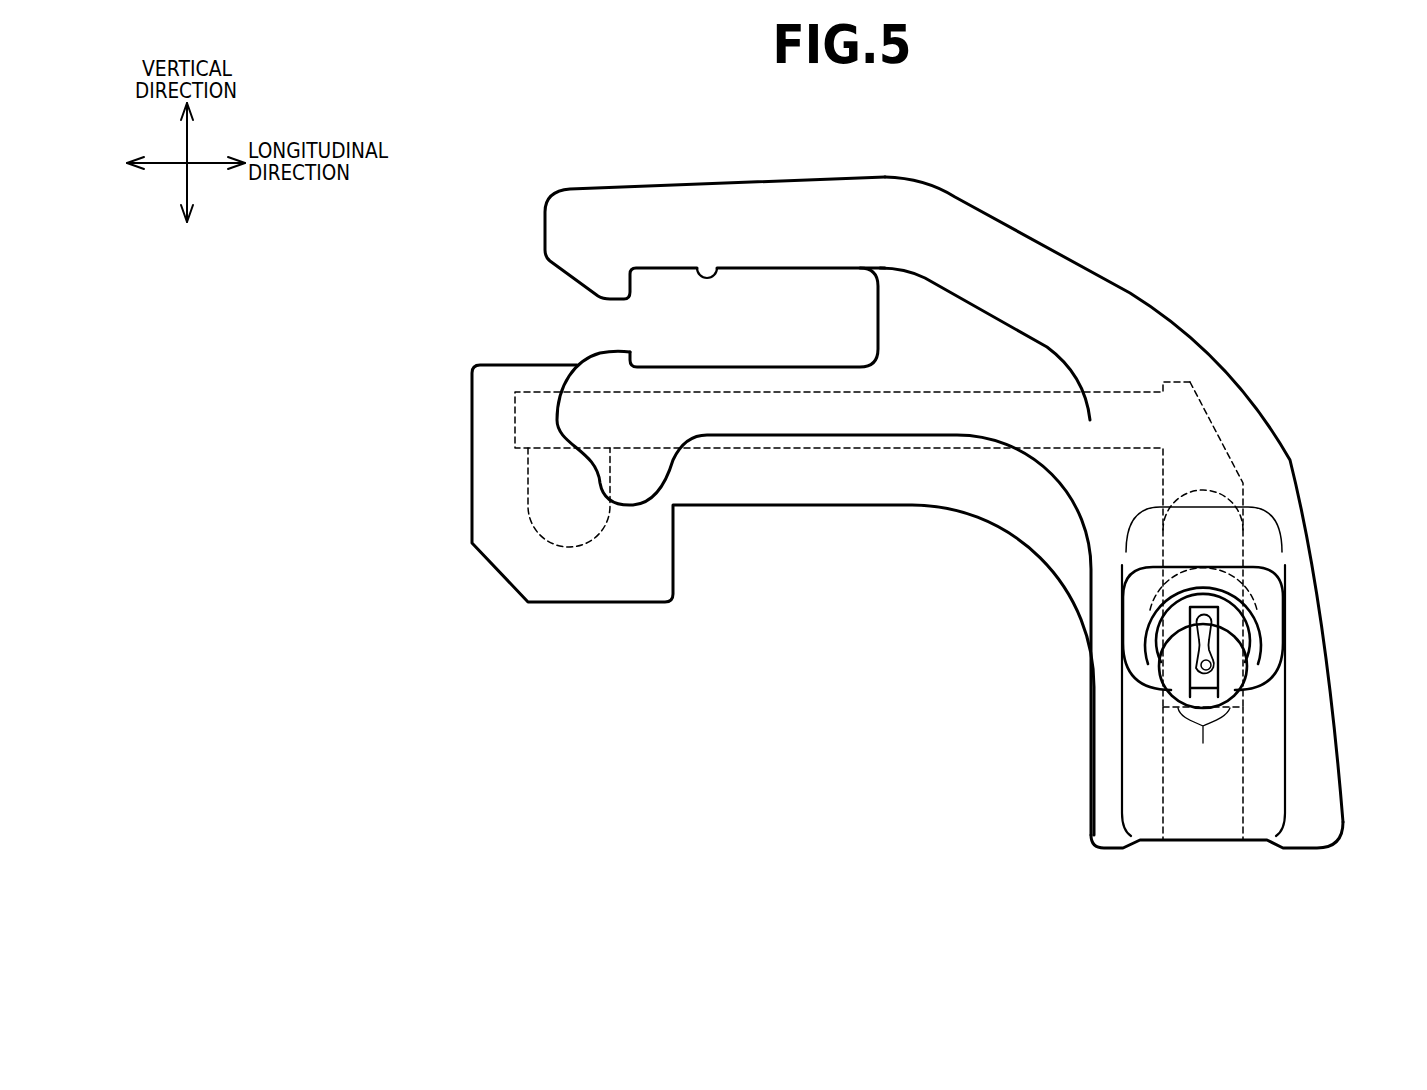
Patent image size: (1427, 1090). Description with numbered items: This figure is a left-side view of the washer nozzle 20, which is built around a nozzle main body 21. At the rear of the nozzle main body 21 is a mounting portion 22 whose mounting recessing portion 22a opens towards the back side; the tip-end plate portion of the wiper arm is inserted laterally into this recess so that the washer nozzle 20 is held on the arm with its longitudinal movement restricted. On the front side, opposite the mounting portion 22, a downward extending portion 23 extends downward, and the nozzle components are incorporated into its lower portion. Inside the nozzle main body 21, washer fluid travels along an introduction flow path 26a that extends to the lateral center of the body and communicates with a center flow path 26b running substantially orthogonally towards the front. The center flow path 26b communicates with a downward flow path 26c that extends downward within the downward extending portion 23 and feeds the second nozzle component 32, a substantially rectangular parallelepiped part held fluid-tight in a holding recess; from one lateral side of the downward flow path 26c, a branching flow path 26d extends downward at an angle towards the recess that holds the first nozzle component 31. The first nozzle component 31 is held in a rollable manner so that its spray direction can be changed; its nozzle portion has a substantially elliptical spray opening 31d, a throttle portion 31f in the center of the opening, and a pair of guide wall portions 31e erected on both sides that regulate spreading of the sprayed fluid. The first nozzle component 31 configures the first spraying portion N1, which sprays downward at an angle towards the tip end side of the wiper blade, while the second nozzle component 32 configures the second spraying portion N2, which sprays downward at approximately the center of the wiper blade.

The washer nozzle 20 is at (1085, 150).
The nozzle main body 21 is at (1134, 292).
The mounting portion 22 is at (653, 183).
The mounting recessing portion 22a is at (718, 272).
The downward extending portion 23 is at (1338, 748).
The introduction flow path 26a is at (600, 522).
The center flow path 26b is at (908, 398).
The downward flow path 26c is at (1233, 462).
The branching flow path 26d is at (1244, 541).
The first nozzle component 31 is at (1255, 622).
The spray opening 31d is at (1211, 662).
The guide wall portions 31e is at (1204, 744).
The throttle portion 31f is at (1190, 645).
The second nozzle component 32 is at (1194, 826).
The first spraying portion N1 is at (1137, 552).
The second spraying portion N2 is at (1233, 843).